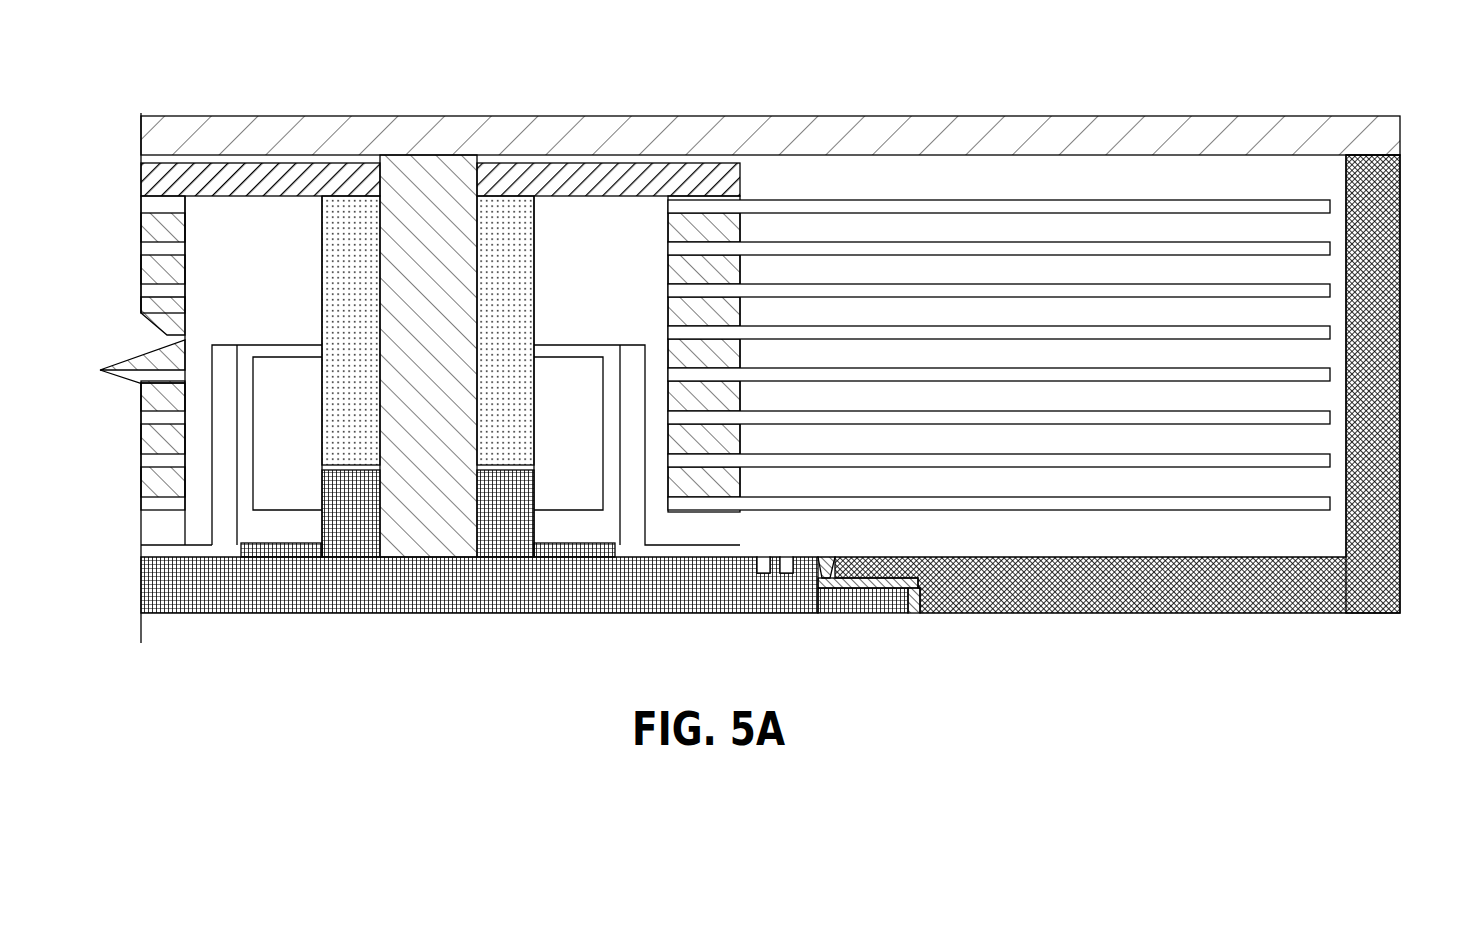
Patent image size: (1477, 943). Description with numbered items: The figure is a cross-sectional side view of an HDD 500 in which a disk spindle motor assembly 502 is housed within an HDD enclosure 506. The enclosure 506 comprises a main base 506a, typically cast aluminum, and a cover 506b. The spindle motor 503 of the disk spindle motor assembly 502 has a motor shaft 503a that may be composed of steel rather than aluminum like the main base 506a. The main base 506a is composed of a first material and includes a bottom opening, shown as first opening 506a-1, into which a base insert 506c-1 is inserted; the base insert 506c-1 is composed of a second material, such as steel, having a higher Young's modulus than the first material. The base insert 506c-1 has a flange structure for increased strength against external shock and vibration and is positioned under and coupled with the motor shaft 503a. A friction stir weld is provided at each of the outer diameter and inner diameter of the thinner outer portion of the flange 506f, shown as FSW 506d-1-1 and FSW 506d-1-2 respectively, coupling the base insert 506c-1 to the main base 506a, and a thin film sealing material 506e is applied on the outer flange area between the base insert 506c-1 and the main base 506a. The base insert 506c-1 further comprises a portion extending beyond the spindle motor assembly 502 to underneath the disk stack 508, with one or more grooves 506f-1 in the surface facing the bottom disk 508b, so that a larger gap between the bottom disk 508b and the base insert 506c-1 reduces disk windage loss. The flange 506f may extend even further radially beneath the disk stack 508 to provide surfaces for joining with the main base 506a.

The HDD 500 is at (322, 75).
The disk spindle motor assembly 502 is at (513, 162).
The spindle motor 503 is at (615, 248).
The motor shaft 503a is at (413, 178).
The HDD enclosure 506 is at (1140, 618).
The main base 506a is at (1388, 540).
The first opening 506a-1 is at (622, 625).
The cover 506b is at (1303, 128).
The base insert 506c-1 is at (432, 626).
The friction stir weld 506d-1-1 is at (912, 612).
The friction stir weld 506d-1-2 is at (828, 556).
The thin film sealing material 506e is at (918, 583).
The flange 506f is at (872, 600).
The groove 506f-1 is at (800, 556).
The disk stack 508 is at (1060, 368).
The bottom disk 508b is at (999, 521).